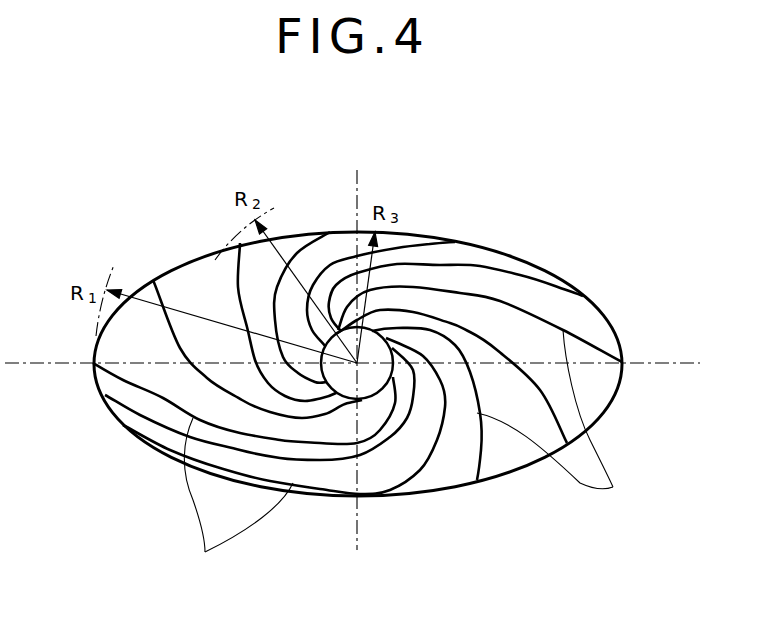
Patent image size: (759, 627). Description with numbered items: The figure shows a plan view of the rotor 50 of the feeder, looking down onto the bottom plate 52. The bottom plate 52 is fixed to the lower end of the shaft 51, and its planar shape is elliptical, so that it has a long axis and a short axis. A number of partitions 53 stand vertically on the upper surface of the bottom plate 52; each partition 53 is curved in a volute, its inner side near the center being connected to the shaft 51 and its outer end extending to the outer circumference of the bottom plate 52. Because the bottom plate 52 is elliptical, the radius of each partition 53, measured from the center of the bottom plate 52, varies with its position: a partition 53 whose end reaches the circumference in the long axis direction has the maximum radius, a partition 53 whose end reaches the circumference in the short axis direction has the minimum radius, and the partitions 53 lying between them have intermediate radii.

The rotor 50 is at (180, 250).
The shaft 51 is at (374, 348).
The bottom plate 52 is at (438, 480).
The partitions 53 is at (414, 458).